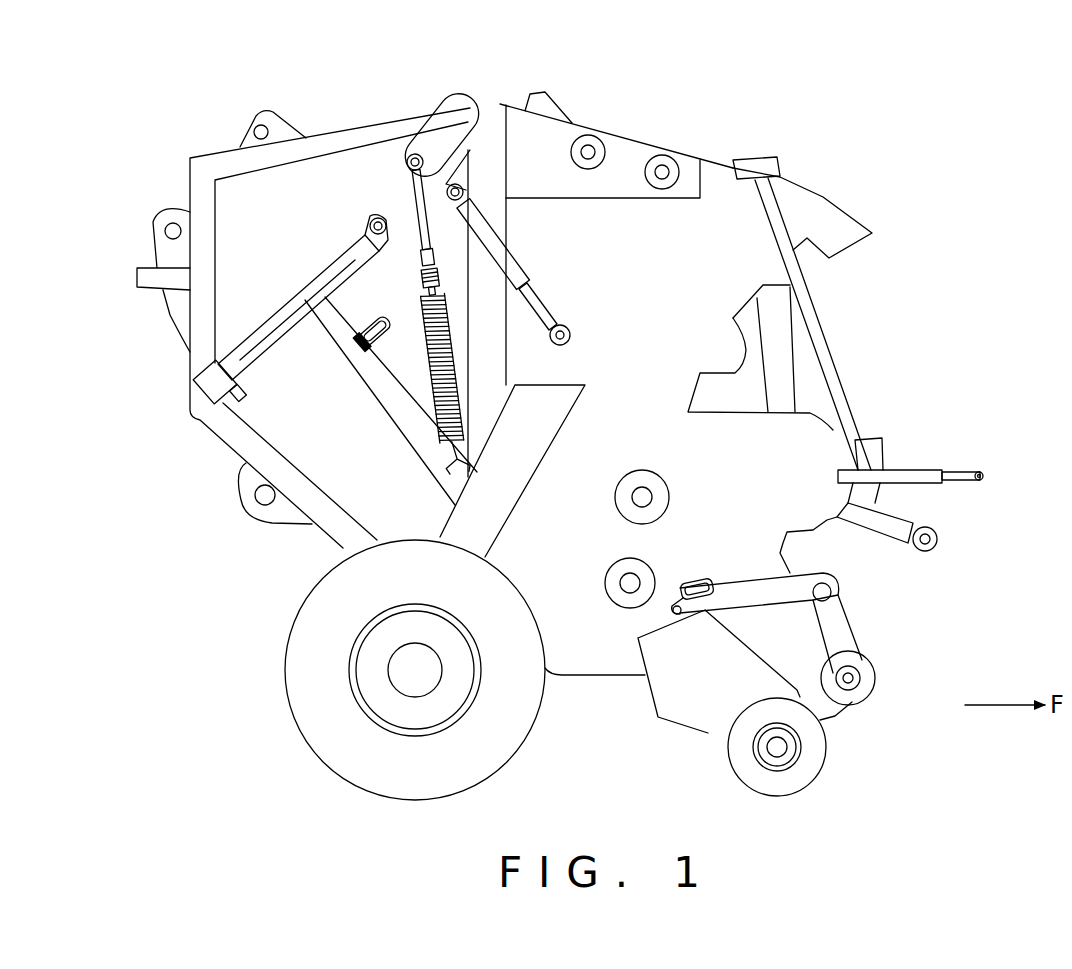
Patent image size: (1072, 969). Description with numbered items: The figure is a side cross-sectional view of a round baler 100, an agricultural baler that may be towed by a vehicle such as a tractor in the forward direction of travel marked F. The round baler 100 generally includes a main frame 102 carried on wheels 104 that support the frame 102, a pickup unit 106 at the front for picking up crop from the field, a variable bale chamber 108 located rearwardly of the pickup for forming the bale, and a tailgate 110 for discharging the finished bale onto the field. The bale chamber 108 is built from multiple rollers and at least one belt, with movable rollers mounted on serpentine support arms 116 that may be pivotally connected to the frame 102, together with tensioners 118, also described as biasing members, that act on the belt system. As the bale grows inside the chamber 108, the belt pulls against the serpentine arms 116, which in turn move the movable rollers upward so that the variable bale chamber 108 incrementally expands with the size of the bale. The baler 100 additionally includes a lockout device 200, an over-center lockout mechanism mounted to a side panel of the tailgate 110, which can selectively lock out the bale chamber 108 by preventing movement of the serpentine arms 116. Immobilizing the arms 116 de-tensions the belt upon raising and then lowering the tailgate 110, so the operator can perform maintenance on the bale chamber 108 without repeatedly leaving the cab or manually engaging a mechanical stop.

The round baler 100 is at (900, 115).
The main frame 102 is at (863, 250).
The wheels 104 is at (337, 770).
The pickup unit 106 is at (856, 710).
The variable bale chamber 108 is at (478, 278).
The tailgate 110 is at (270, 207).
The serpentine support arms 116 is at (480, 97).
The tensioners 118 is at (428, 416).
The lockout device 200 is at (352, 343).